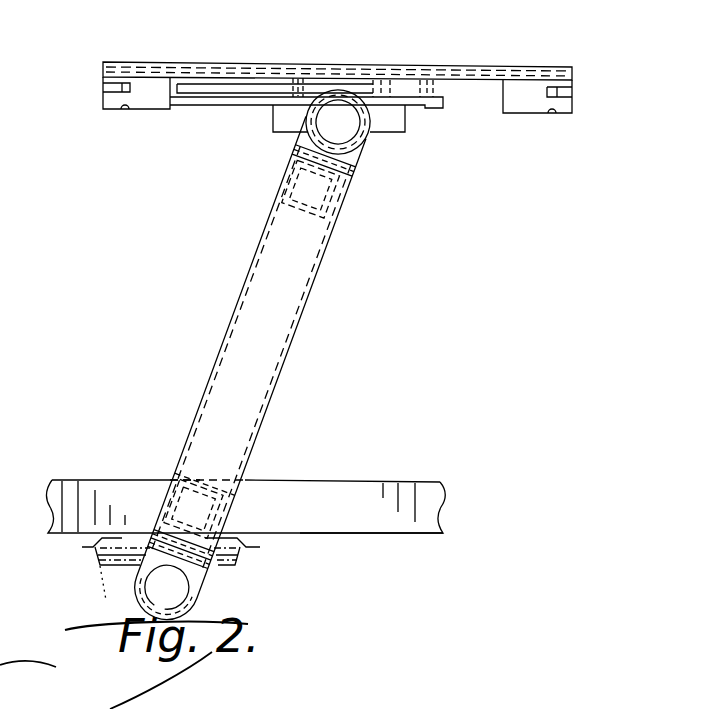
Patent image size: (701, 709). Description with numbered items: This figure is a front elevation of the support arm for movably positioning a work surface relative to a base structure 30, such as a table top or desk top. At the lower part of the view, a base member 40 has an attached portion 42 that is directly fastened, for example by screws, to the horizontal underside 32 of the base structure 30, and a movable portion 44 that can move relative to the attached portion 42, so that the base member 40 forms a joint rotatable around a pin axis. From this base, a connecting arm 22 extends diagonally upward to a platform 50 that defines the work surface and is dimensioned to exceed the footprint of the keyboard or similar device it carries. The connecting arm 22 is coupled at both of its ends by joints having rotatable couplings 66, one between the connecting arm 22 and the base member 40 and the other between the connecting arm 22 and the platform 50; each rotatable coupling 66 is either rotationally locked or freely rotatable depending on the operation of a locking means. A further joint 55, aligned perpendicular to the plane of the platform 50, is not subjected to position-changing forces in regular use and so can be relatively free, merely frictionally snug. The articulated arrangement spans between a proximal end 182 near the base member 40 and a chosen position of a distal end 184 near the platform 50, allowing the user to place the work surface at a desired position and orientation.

The joint 55 is at (338, 68).
The platform 50 is at (201, 109).
The distal end 184 is at (264, 122).
The connecting arm 22 is at (291, 343).
The rotatable coupling 66 is at (360, 146).
The movable portion 44 is at (222, 578).
The base structure 30 is at (348, 490).
The underside 32 is at (353, 535).
The proximal end 182 is at (170, 470).
The base member 40 is at (150, 516).
The attached portion 42 is at (250, 547).